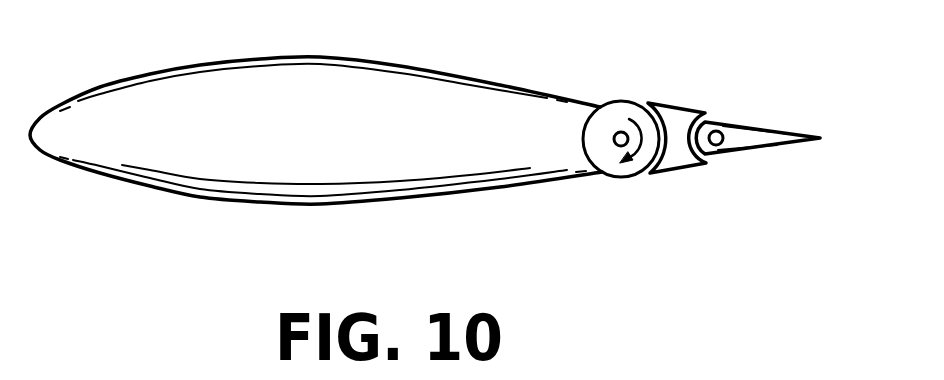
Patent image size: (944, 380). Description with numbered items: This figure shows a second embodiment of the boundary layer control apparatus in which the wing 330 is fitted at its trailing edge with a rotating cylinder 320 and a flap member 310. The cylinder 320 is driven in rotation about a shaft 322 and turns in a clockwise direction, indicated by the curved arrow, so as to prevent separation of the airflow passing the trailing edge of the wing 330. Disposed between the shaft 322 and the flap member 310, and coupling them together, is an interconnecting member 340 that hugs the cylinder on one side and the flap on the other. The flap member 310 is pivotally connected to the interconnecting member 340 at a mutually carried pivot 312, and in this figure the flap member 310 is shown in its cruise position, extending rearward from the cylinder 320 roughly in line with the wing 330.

The flap member 310 is at (757, 160).
The pivot 312 is at (717, 130).
The rotating cylinder 320 is at (623, 131).
The shaft 322 is at (638, 117).
The wing 330 is at (223, 163).
The interconnecting member 340 is at (671, 170).